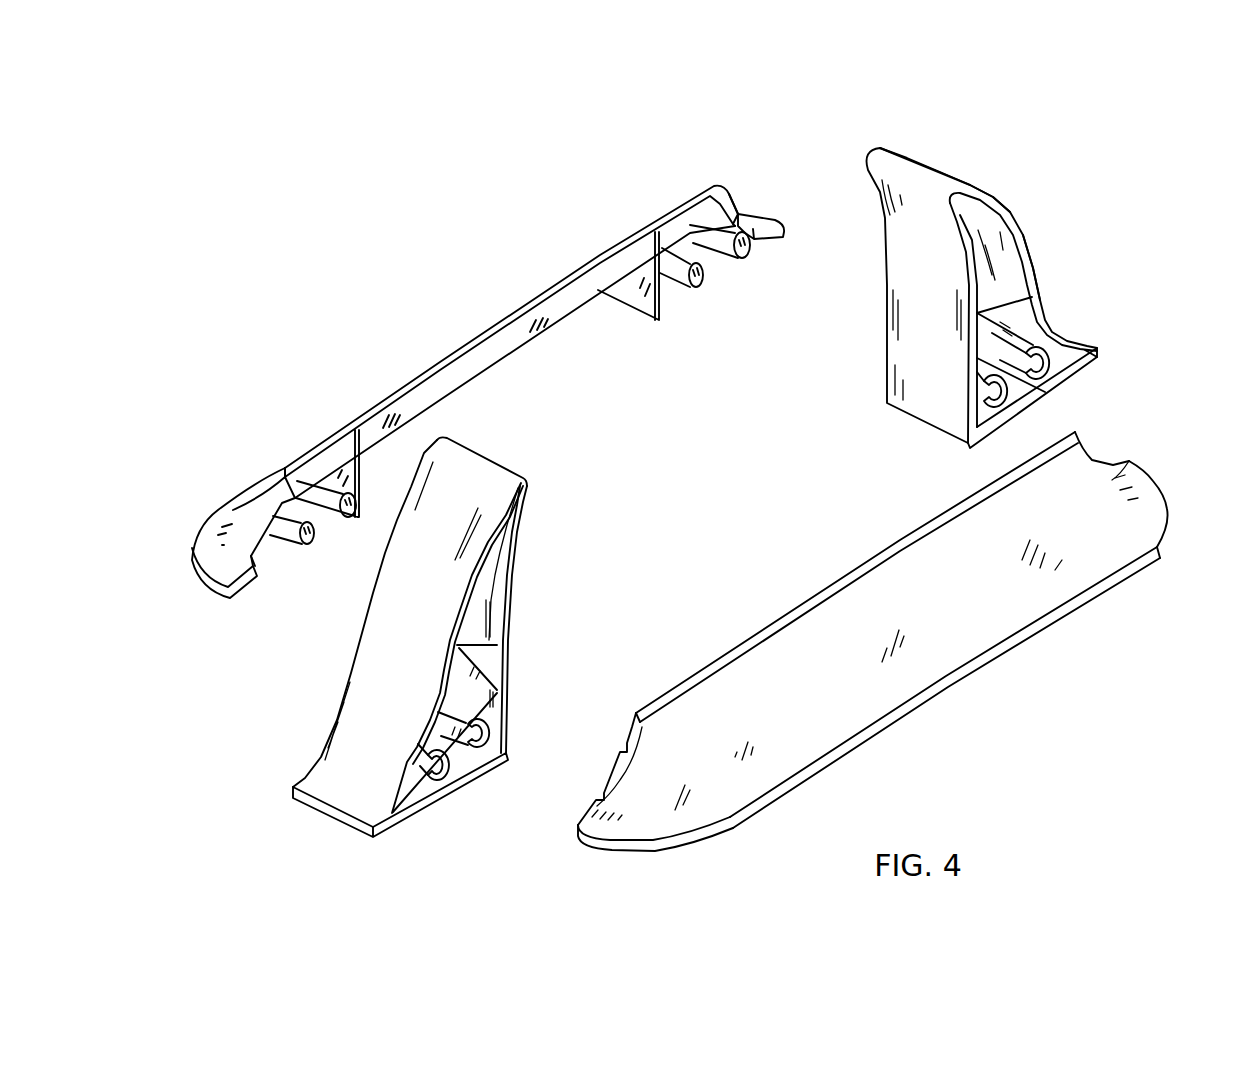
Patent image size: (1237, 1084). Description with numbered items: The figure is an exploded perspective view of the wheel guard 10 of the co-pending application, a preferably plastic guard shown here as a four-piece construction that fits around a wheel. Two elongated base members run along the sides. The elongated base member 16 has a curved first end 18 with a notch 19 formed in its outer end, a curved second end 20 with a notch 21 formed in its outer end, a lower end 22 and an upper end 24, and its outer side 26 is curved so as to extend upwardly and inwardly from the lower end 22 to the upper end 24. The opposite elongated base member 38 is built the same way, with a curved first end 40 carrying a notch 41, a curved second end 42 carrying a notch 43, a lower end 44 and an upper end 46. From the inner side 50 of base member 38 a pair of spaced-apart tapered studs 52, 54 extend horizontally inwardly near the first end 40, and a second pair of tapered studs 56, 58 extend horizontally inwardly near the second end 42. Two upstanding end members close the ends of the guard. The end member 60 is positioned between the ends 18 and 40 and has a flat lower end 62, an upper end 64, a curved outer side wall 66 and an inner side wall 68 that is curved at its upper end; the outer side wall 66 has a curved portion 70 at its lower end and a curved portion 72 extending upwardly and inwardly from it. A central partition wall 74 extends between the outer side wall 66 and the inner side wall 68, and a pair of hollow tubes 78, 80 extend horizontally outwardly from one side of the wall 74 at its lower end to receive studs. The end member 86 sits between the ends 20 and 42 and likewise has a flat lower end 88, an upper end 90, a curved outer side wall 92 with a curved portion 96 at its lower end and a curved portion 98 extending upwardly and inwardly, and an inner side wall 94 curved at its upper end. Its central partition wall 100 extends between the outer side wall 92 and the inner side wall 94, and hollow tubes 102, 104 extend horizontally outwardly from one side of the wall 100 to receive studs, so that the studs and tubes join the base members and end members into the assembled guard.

The wheel guard 10 is at (1005, 172).
The elongated base member 16 is at (815, 595).
The curved first end 18 is at (653, 800).
The notch 19 is at (612, 781).
The curved second end 20 is at (1142, 488).
The notch 21 is at (1098, 460).
The lower end 22 is at (947, 678).
The upper end 24 is at (758, 640).
The outer side 26 is at (837, 688).
The elongated base member 38 is at (506, 294).
The curved first end 40 is at (243, 498).
The notch 41 is at (263, 547).
The curved second end 42 is at (727, 200).
The notch 43 is at (745, 225).
The lower end 44 is at (283, 462).
The upper end 46 is at (453, 360).
The inner side 50 is at (498, 356).
The stud 52 is at (307, 535).
The stud 54 is at (355, 500).
The stud 56 is at (748, 258).
The stud 58 is at (691, 280).
The upstanding end member 60 is at (530, 540).
The flat lower end 62 is at (447, 783).
The upper end 64 is at (508, 452).
The curved outer side wall 66 is at (390, 603).
The inner side wall 68 is at (509, 597).
The curved portion 70 is at (382, 775).
The curved portion 72 is at (432, 571).
The central partition wall 74 is at (459, 646).
The hollow tube 78 is at (423, 768).
The hollow tube 80 is at (487, 730).
The upstanding end member 86 is at (1020, 216).
The flat lower end 88 is at (1047, 390).
The upper end 90 is at (912, 155).
The curved outer side wall 92 is at (1033, 273).
The inner side wall 94 is at (820, 353).
The curved portion 96 is at (1047, 345).
The curved portion 98 is at (996, 200).
The central partition wall 100 is at (983, 273).
The hollow tube 102 is at (1070, 347).
The hollow tube 104 is at (977, 377).